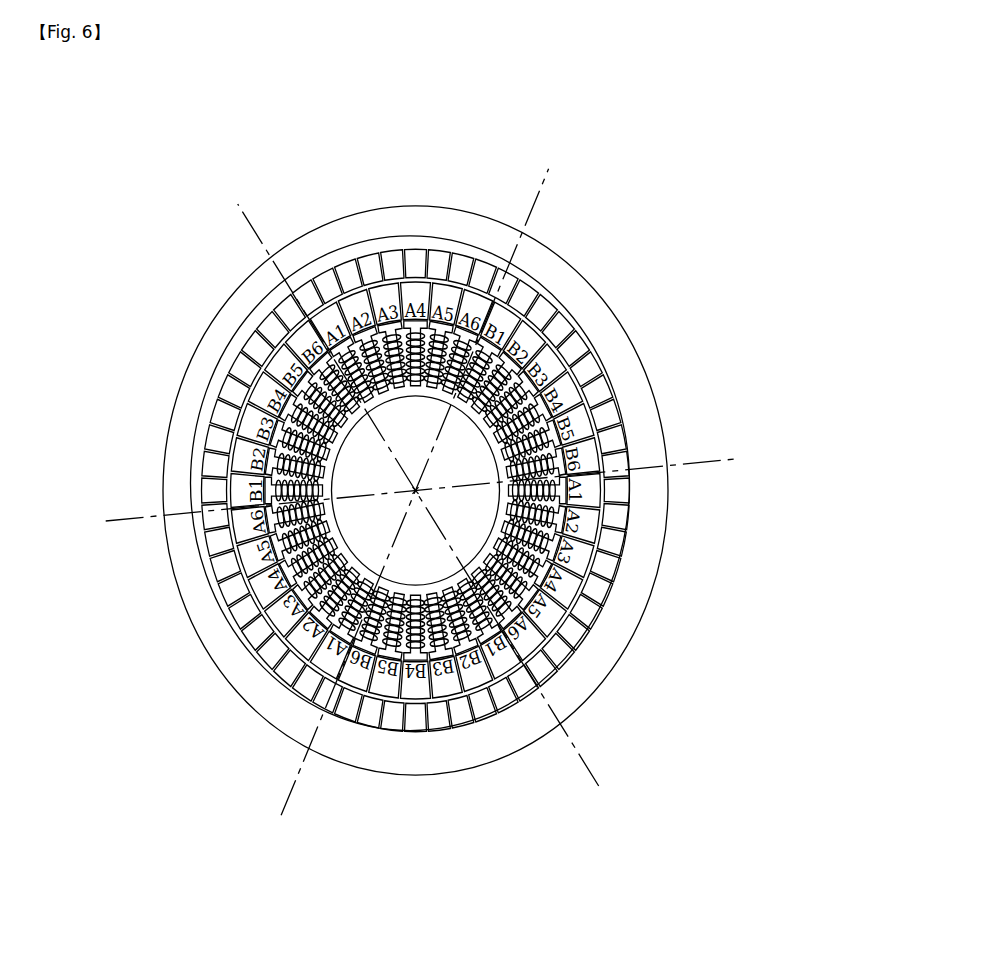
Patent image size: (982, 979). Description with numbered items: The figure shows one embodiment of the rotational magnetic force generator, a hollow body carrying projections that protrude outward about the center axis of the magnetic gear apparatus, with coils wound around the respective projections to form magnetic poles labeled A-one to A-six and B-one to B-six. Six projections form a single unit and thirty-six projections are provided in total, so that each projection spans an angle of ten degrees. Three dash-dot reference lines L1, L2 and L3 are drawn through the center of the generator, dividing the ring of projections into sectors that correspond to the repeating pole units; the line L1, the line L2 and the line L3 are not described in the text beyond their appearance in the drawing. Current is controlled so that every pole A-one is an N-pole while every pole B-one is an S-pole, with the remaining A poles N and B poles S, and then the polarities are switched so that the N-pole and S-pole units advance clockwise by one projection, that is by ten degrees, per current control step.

The first reference line L1 is at (405, 477).
The second reference line L2 is at (427, 475).
The third reference line L3 is at (402, 495).